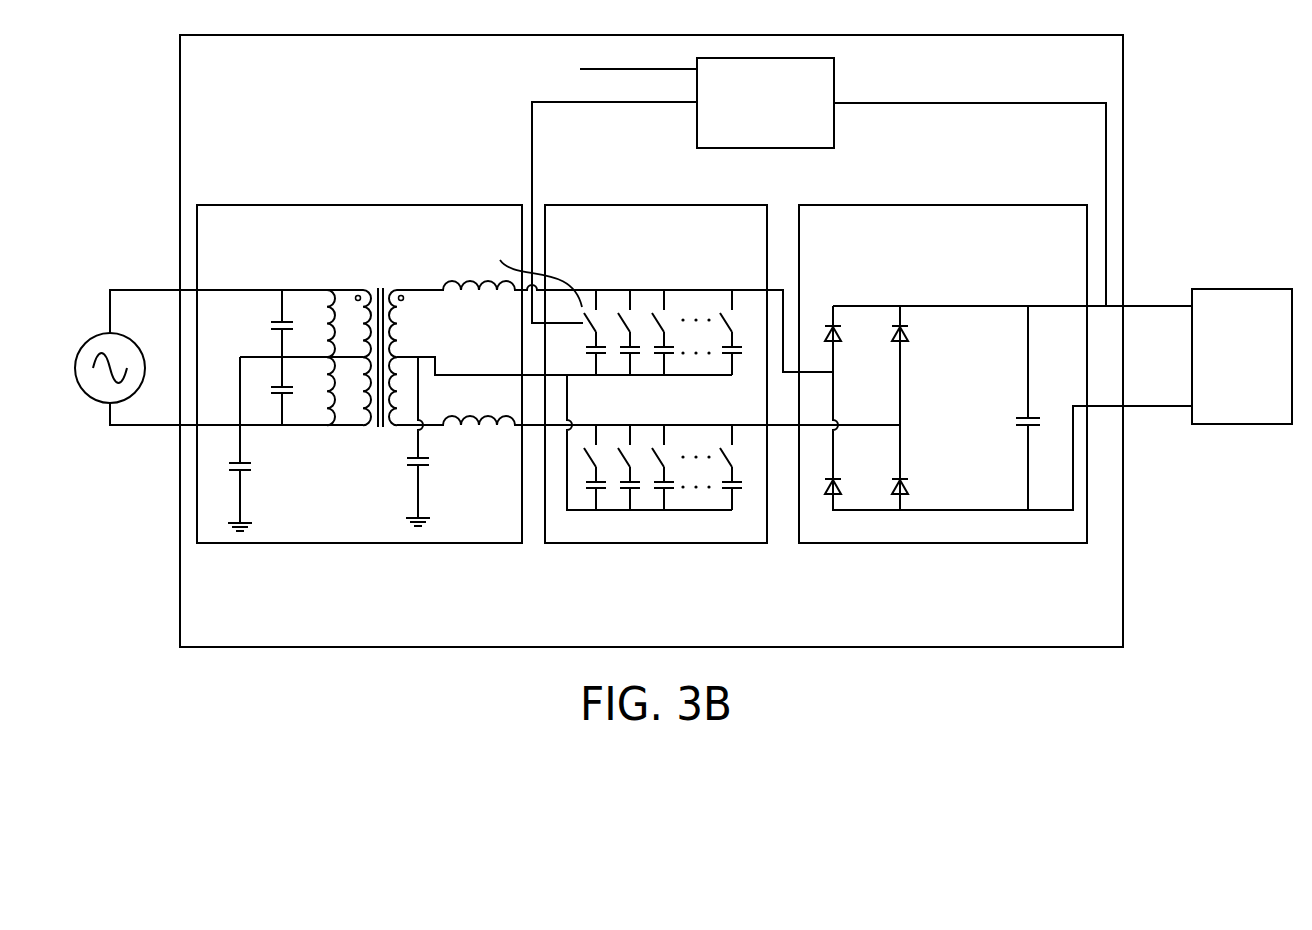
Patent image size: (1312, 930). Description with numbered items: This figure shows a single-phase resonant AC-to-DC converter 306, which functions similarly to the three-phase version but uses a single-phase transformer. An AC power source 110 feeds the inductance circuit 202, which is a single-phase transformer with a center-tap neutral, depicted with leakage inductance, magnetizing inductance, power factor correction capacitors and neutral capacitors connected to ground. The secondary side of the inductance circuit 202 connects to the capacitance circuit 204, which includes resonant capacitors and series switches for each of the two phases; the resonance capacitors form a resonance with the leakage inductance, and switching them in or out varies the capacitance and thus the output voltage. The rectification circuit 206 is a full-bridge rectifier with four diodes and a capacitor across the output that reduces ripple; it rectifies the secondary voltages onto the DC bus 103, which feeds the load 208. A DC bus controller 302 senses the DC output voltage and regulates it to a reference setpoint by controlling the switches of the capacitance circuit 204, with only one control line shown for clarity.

The AC power source 110 is at (215, 359).
The inductance circuit 202 is at (342, 265).
The capacitance circuit 204 is at (637, 263).
The rectification circuit 206 is at (962, 263).
The load 208 is at (1225, 380).
The DC bus controller 302 is at (747, 141).
The single-phase resonant AC-to-DC converter 306 is at (668, 640).
The DC bus 103 is at (1154, 407).